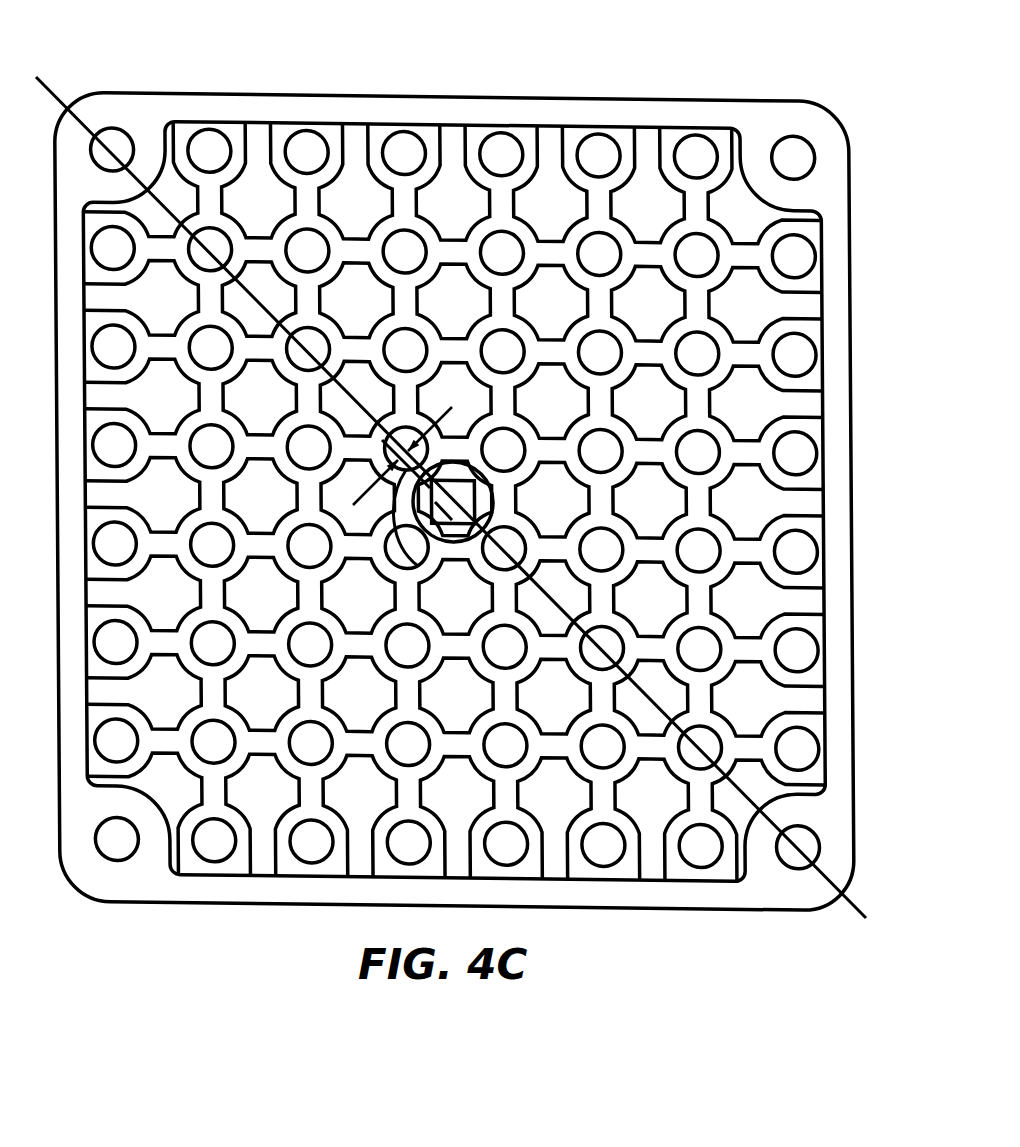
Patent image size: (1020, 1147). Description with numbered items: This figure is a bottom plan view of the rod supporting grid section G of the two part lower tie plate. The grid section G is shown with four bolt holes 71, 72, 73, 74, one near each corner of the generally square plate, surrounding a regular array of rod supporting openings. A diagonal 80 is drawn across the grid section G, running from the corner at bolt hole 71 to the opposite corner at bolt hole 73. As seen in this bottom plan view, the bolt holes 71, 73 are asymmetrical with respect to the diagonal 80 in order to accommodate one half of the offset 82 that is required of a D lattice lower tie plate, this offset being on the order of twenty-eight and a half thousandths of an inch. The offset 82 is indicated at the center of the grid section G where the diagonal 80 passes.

The rod supporting grid section G is at (326, 88).
The bolt hole 71 is at (128, 130).
The bolt hole 72 is at (779, 138).
The bolt hole 73 is at (797, 873).
The bolt hole 74 is at (120, 864).
The diagonal 80 is at (61, 98).
The offset 82 is at (418, 566).